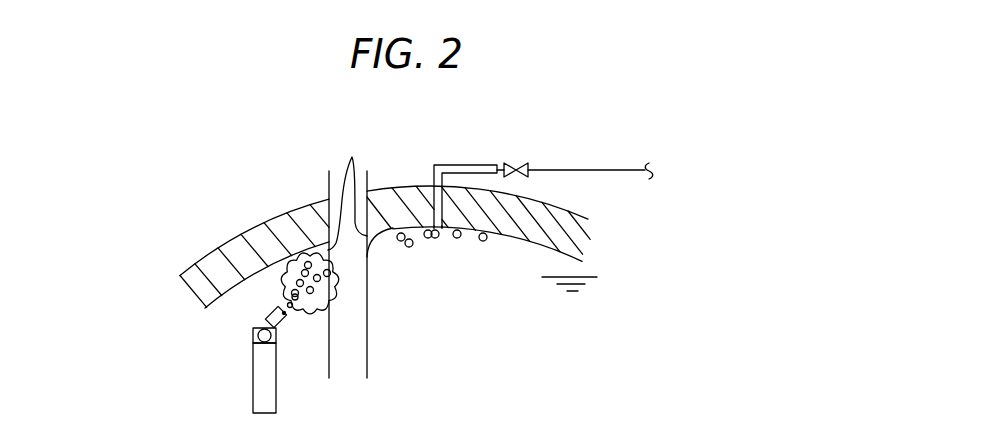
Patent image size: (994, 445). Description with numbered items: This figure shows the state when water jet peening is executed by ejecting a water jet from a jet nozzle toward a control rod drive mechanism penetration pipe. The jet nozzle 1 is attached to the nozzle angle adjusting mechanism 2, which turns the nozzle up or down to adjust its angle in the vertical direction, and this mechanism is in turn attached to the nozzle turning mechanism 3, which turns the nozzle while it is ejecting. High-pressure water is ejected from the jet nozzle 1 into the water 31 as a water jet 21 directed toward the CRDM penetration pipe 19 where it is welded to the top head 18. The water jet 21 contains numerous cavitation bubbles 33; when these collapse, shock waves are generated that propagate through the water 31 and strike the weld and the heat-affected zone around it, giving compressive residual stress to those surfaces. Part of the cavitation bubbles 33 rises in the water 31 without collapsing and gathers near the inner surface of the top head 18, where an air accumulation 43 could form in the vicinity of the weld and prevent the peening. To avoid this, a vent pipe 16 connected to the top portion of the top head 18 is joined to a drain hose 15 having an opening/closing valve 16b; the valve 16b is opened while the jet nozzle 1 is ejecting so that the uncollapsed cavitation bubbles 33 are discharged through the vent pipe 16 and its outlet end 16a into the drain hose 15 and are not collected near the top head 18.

The jet nozzle 1 is at (272, 313).
The nozzle angle adjusting mechanism 2 is at (253, 336).
The nozzle turning mechanism 3 is at (253, 377).
The drain hose 15 is at (600, 169).
The vent pipe 16 is at (448, 165).
The pipe outlet 16a is at (442, 230).
The opening/closing valve 16b is at (523, 163).
The top head 18 is at (277, 220).
The CRDM penetration pipe 19 is at (367, 347).
The water jet 21 is at (303, 306).
The water 31 is at (573, 294).
The cavitation bubbles 33 is at (407, 247).
The air accumulation 43 is at (352, 158).